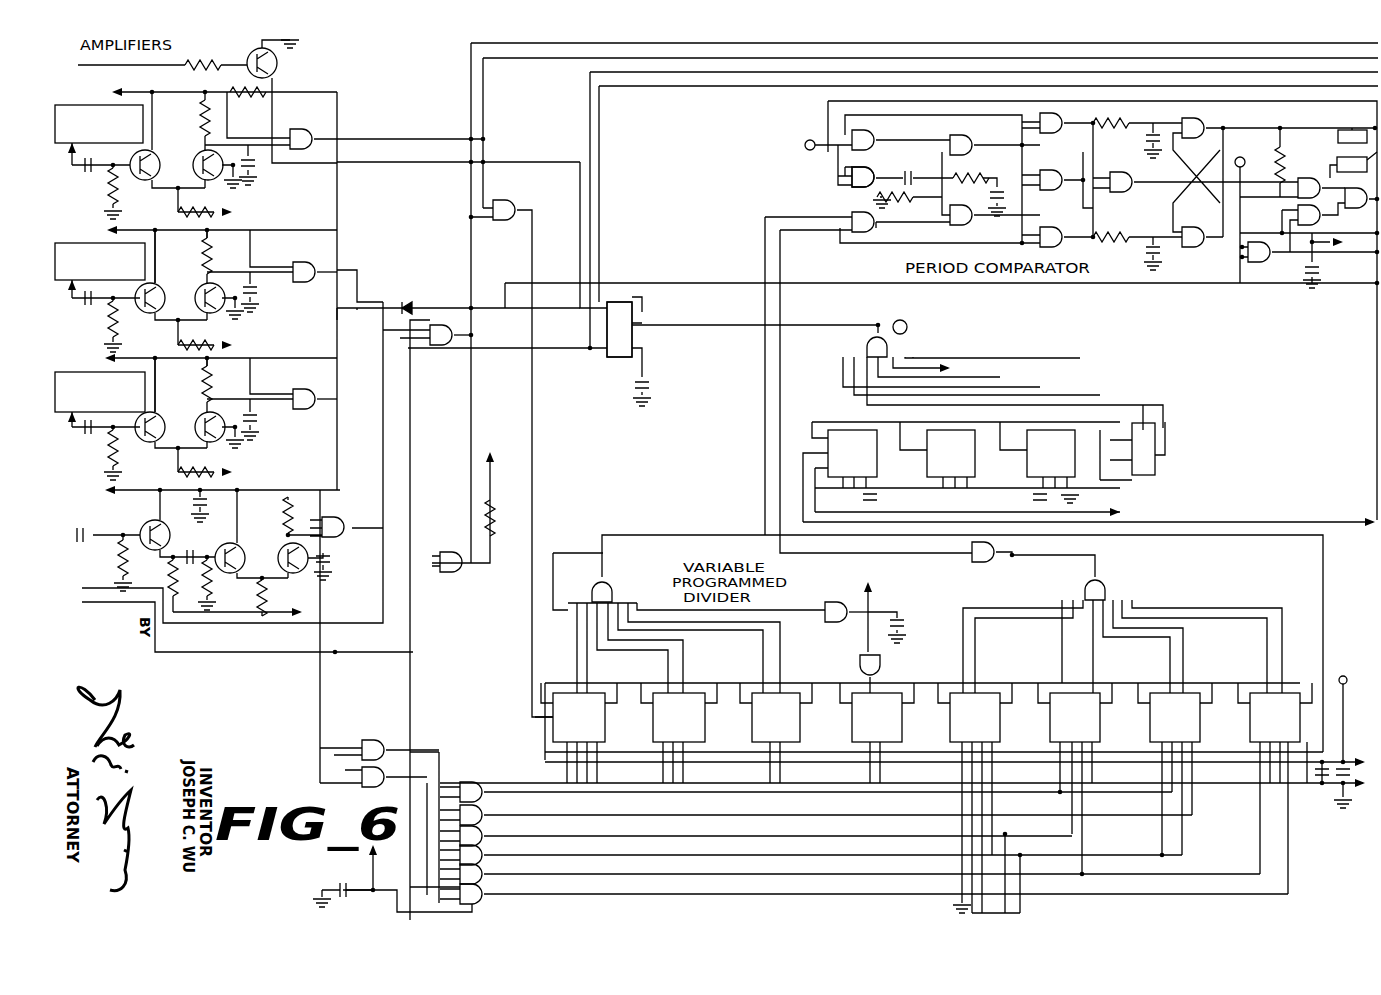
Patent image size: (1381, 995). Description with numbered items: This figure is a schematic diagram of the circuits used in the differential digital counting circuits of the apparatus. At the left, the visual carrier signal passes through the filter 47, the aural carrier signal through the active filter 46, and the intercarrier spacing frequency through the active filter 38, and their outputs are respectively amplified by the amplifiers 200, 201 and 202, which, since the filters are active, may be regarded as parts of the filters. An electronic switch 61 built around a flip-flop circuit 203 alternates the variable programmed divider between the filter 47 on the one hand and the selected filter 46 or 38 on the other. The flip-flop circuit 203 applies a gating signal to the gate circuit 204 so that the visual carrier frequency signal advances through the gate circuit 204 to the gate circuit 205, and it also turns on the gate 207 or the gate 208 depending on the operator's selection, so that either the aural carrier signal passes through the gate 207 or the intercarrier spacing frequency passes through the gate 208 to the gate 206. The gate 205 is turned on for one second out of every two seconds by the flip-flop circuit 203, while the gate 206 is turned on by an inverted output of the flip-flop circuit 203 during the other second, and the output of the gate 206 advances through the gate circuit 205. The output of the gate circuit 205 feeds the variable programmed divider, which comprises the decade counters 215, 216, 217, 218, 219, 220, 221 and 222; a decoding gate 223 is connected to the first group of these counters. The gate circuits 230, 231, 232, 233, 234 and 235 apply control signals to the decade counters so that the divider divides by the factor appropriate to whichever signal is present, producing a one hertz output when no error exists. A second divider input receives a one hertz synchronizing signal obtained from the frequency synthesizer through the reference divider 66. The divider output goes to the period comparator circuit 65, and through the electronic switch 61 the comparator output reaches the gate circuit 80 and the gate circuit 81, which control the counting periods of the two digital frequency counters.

The active filter 38 is at (93, 372).
The active filter 46 is at (94, 243).
The filter 47 is at (91, 106).
The electronic switch 61 is at (610, 245).
The period comparator circuit 65 is at (838, 177).
The reference divider 66 is at (1182, 415).
The gate circuit 80 is at (1338, 130).
The gate circuit 81 is at (1337, 165).
The amplifier 200 is at (172, 80).
The amplifier 201 is at (255, 228).
The amplifier 202 is at (260, 438).
The flip-flop circuit 203 is at (615, 352).
The gate circuit 204 is at (318, 142).
The gate circuit 205 is at (509, 212).
The gate 206 is at (461, 340).
The gate 207 is at (318, 255).
The gate 208 is at (318, 382).
The decade counter 215 is at (560, 715).
The decade counter 216 is at (683, 700).
The decade counter 217 is at (793, 731).
The decade counter 218 is at (893, 731).
The decade counter 219 is at (958, 700).
The decade counter 220 is at (1055, 700).
The decade counter 221 is at (1162, 700).
The decade counter 222 is at (1259, 700).
The decoding gate 223 is at (602, 598).
The gate circuit 230 is at (480, 780).
The gate circuit 231 is at (480, 803).
The gate circuit 232 is at (480, 824).
The gate circuit 233 is at (480, 843).
The gate circuit 234 is at (480, 862).
The gate circuit 235 is at (480, 882).